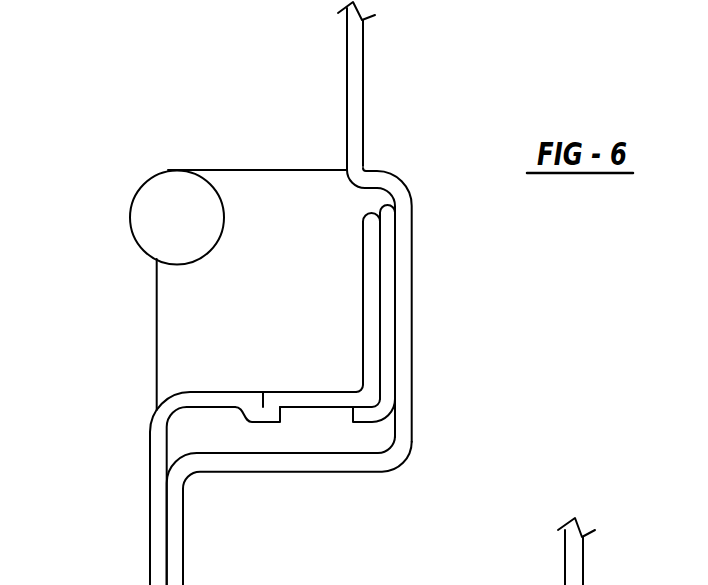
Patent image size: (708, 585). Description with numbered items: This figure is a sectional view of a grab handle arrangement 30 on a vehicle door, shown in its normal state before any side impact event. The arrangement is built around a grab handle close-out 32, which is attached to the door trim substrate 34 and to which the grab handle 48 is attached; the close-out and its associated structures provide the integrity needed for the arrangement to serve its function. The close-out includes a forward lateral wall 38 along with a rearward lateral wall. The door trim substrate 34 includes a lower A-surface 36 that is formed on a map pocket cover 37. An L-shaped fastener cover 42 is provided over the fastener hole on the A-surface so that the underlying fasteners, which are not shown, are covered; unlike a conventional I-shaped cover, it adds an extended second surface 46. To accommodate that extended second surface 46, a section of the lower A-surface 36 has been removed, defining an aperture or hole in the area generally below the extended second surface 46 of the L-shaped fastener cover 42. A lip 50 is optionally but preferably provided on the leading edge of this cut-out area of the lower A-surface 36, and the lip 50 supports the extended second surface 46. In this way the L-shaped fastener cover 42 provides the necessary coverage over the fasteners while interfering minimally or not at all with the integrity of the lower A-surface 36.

The grab handle arrangement 30 is at (110, 402).
The grab handle close-out 32 is at (290, 207).
The door trim substrate 34 is at (353, 91).
The lower A-surface 36 is at (227, 397).
The map pocket cover 37 is at (382, 347).
The forward lateral wall 38 is at (247, 207).
The L-shaped fastener cover 42 is at (367, 305).
The extended second surface 46 is at (297, 395).
The grab handle 48 is at (165, 207).
The lip 50 is at (263, 413).